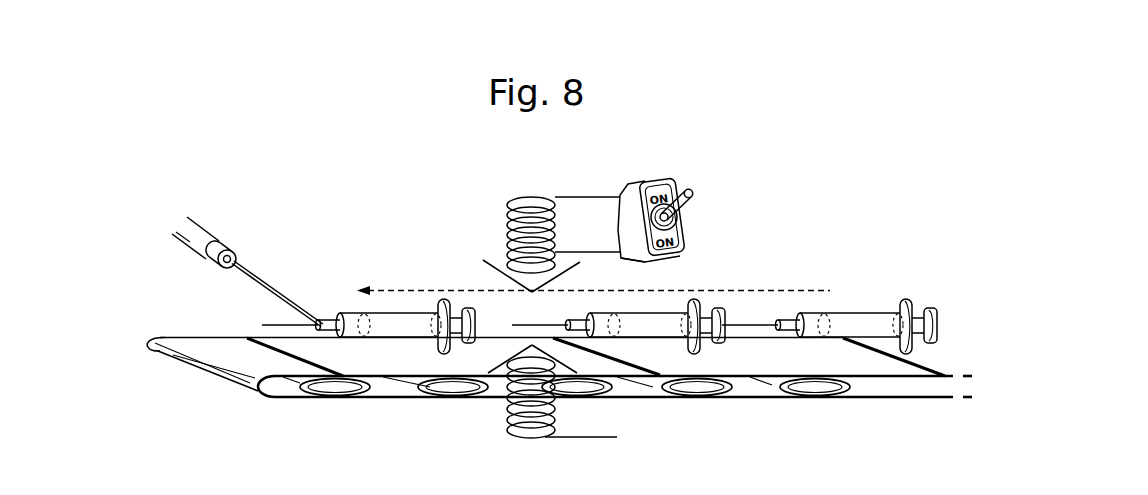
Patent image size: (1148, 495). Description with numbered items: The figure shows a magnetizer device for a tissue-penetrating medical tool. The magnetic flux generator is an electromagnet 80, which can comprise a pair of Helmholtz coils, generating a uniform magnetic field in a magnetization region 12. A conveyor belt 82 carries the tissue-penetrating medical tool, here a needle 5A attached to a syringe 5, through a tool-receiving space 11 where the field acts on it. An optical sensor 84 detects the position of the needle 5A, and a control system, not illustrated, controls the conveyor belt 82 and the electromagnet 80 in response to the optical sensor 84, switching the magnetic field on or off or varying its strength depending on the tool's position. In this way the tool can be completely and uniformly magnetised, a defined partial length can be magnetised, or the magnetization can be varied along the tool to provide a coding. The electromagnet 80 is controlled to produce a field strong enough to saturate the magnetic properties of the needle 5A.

The syringe 5 is at (672, 318).
The needle 5A is at (518, 327).
The tool-receiving space 11 is at (566, 285).
The magnetization region 12 is at (522, 317).
The electromagnet 80 is at (517, 436).
The conveyor belt 82 is at (822, 390).
The optical sensor 84 is at (223, 243).